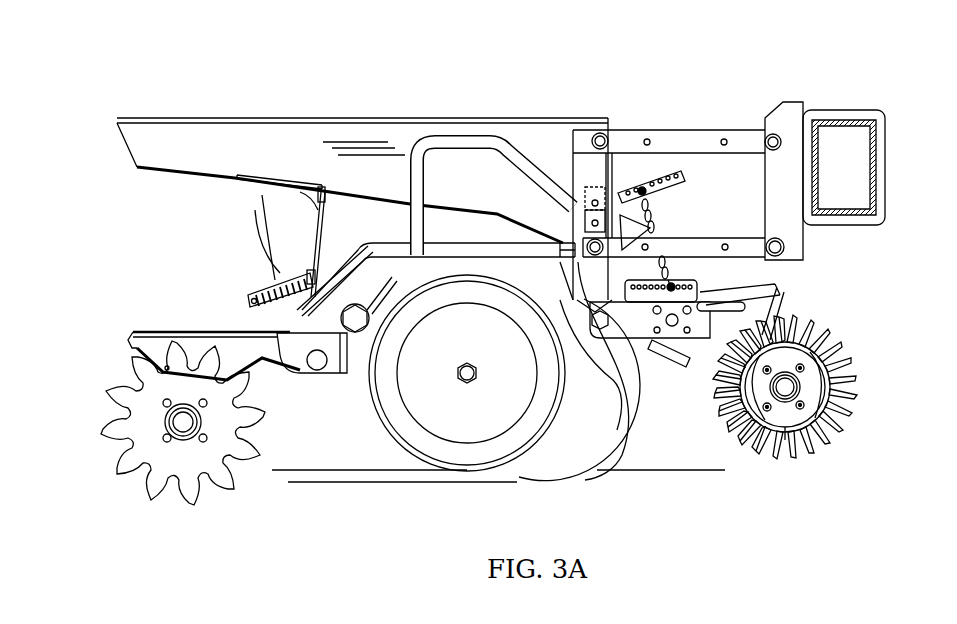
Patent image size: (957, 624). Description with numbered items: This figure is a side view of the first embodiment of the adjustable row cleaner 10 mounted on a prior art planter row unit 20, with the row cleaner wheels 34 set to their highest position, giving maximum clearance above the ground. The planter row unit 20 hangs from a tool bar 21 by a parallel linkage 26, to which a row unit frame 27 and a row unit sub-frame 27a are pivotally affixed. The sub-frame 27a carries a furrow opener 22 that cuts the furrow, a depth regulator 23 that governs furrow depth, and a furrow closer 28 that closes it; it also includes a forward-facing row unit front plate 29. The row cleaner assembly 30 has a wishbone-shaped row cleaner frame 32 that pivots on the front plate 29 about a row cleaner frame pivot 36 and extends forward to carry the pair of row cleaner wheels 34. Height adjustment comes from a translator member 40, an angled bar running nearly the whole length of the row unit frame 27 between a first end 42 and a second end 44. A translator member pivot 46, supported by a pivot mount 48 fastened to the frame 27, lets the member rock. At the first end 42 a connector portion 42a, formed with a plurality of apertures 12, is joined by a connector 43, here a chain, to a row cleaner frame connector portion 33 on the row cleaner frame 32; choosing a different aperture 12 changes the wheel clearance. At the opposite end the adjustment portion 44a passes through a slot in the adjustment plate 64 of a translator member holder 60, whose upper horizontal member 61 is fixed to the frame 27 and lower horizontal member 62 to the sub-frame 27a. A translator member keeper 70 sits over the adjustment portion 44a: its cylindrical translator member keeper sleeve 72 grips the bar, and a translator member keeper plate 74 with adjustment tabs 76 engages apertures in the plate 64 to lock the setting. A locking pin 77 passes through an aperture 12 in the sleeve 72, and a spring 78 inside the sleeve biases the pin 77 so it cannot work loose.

The adjustable row cleaner 10 is at (396, 98).
The row unit frame 27 is at (177, 143).
The row unit sub-frame 27a is at (557, 277).
The translator member 40 is at (517, 140).
The linkage 26 is at (747, 238).
The planter row unit 20 is at (785, 67).
The tool bar 21 is at (873, 167).
The translator member pivot 46 is at (587, 203).
The pivot mount 48 is at (587, 223).
The translator member first end 42 is at (653, 180).
The connector portion 42a is at (660, 200).
The aperture 12 is at (673, 200).
The connector 43 is at (667, 260).
The row cleaner frame 32 is at (687, 330).
The row cleaner frame connector portion 33 is at (705, 292).
The row cleaner frame pivot 36 is at (613, 373).
The row unit front plate 29 is at (600, 430).
The furrow opener 22 is at (567, 447).
The translator member second end 44 is at (400, 297).
The depth regulator 23 is at (463, 455).
The row cleaner assembly 30 is at (840, 317).
The row cleaner wheels 34 is at (787, 443).
The furrow closer 28 is at (113, 323).
The lower horizontal member 62 is at (297, 310).
The upper horizontal member 61 is at (307, 187).
The translator member holder 60 is at (215, 210).
The adjustment portion 44a is at (290, 220).
The translator member keeper plate 74 is at (313, 280).
The translator member keeper sleeve 72 is at (256, 232).
The adjustment plate 64 is at (322, 198).
The adjustment tab 76 is at (312, 270).
The translator member keeper 70 is at (230, 282).
The spring 78 is at (277, 283).
The locking pin 77 is at (247, 298).